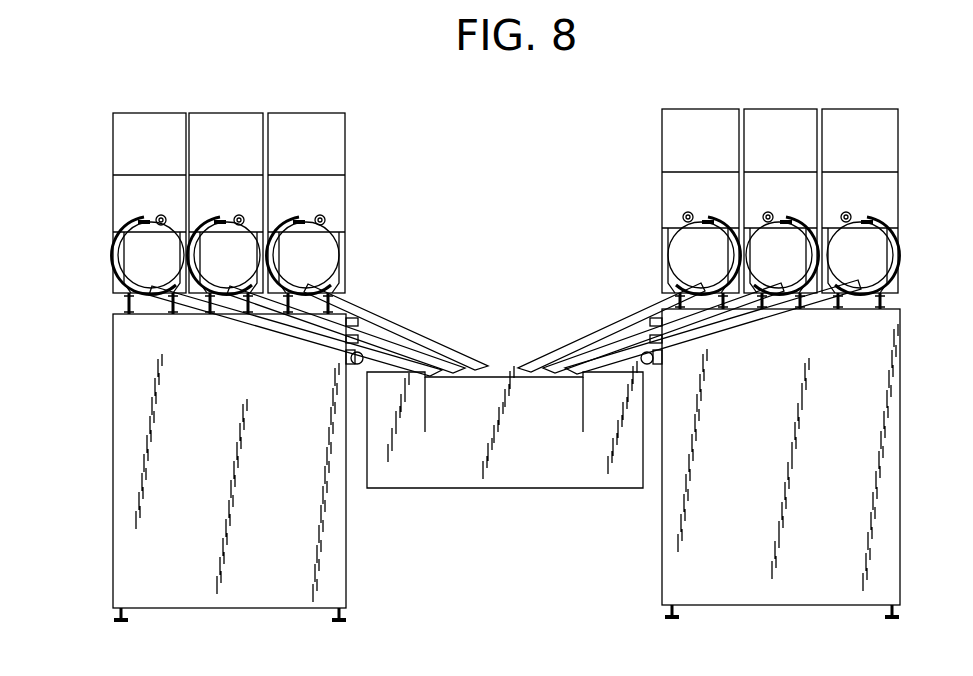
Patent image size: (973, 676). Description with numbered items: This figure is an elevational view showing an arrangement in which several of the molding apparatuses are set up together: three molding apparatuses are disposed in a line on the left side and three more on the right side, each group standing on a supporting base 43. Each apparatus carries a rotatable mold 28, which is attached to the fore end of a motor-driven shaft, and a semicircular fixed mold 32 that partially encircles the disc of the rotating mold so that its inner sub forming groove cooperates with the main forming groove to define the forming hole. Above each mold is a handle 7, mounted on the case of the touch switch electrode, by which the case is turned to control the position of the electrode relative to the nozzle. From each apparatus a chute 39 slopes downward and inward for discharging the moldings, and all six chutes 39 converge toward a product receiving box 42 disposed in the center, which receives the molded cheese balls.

The handle 7 is at (158, 216).
The rotatable mold 28 is at (335, 258).
The fixed mold 32 is at (116, 262).
The chute 39 is at (280, 325).
The product receiving box 42 is at (531, 472).
The supporting base 43 is at (338, 572).